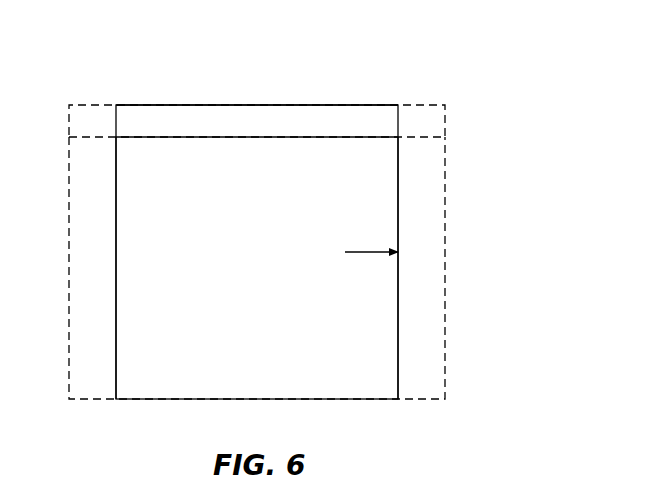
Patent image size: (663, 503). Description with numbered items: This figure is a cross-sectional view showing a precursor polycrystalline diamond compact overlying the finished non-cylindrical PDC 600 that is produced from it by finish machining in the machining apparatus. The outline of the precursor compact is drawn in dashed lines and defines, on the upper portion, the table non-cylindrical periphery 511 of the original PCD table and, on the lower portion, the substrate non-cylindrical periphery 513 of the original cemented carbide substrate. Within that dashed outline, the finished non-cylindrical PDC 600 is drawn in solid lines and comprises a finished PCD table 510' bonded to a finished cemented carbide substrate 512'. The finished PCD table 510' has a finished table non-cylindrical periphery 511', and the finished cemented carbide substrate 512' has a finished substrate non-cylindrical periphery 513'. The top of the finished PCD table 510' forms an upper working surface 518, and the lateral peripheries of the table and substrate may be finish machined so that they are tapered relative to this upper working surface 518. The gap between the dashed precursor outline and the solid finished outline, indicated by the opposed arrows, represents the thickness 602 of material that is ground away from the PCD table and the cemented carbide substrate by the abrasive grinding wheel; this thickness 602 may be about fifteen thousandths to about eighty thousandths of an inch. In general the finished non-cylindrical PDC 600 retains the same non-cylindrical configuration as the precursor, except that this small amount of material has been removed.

The finished non-cylindrical PDC 600 is at (428, 75).
The table non-cylindrical periphery 511 is at (311, 119).
The finished table non-cylindrical periphery 511' is at (318, 101).
The substrate non-cylindrical periphery 513 is at (299, 268).
The finished substrate non-cylindrical periphery 513' is at (464, 268).
The upper working surface 518 is at (143, 105).
The finished PCD table 510' is at (257, 119).
The finished cemented carbide substrate 512' is at (196, 268).
The thickness 602 is at (445, 252).